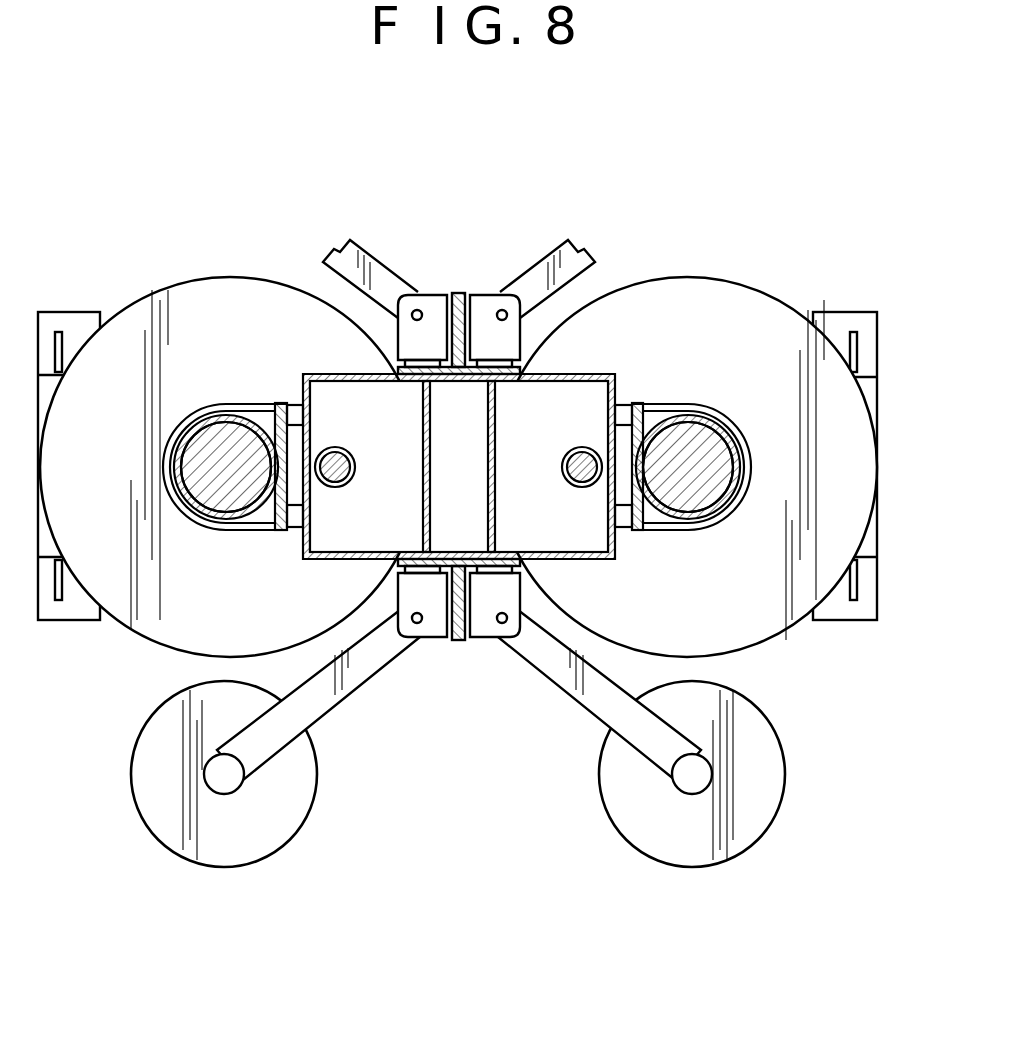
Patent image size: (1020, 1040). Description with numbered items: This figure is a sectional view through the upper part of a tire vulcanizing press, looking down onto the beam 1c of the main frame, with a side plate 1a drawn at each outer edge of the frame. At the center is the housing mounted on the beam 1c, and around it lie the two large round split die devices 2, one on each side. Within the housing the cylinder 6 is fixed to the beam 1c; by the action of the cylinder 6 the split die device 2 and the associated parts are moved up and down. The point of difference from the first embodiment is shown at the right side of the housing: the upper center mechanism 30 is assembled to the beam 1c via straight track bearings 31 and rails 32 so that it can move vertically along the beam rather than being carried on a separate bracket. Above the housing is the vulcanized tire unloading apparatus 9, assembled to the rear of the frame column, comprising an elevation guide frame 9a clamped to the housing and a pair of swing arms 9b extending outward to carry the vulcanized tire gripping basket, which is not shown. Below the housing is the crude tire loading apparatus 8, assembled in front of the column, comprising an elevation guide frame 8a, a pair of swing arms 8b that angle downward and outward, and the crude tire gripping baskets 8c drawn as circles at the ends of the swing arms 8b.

The side plate 1a is at (877, 440).
The beam 1c is at (528, 370).
The split die device 2 is at (750, 615).
The cylinder 6 is at (584, 447).
The crude tire loading apparatus 8 is at (458, 676).
The elevation guide frame 8a is at (457, 640).
The swing arm 8b is at (557, 673).
The crude tire gripping basket 8c is at (617, 823).
The vulcanized tire unloading apparatus 9 is at (459, 279).
The elevation guide frame 9a is at (454, 296).
The swing arm 9b is at (530, 282).
The upper center mechanism 30 is at (750, 445).
The straight track bearings 31 is at (624, 403).
The rails 32 is at (630, 404).